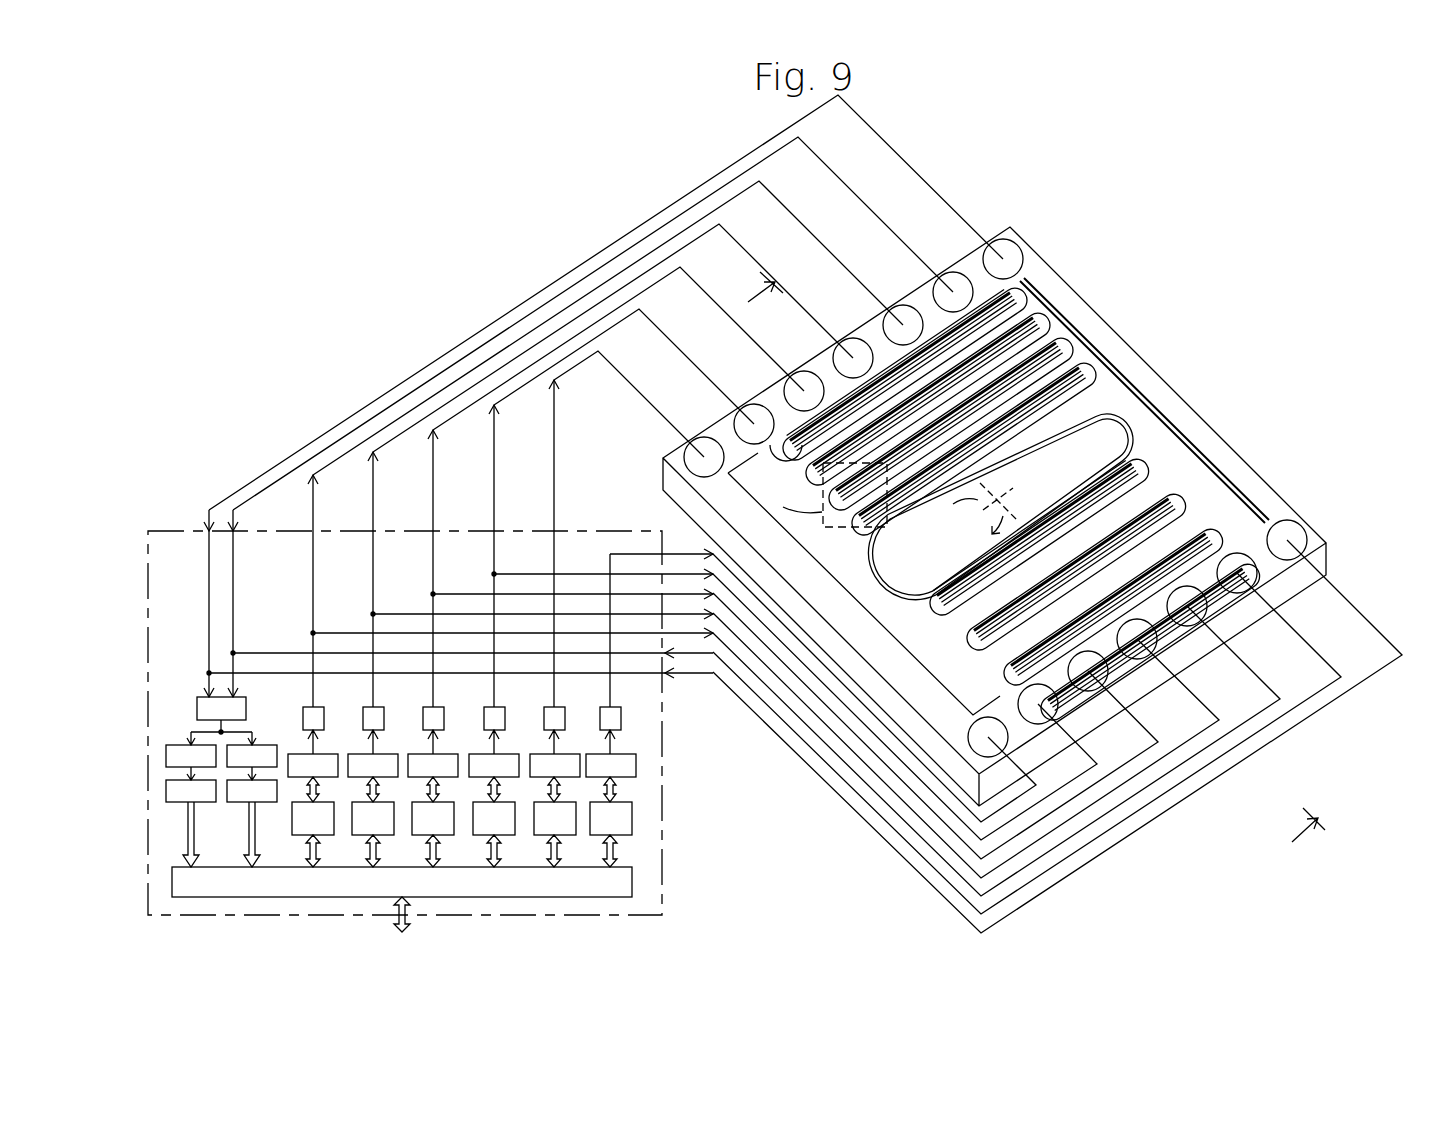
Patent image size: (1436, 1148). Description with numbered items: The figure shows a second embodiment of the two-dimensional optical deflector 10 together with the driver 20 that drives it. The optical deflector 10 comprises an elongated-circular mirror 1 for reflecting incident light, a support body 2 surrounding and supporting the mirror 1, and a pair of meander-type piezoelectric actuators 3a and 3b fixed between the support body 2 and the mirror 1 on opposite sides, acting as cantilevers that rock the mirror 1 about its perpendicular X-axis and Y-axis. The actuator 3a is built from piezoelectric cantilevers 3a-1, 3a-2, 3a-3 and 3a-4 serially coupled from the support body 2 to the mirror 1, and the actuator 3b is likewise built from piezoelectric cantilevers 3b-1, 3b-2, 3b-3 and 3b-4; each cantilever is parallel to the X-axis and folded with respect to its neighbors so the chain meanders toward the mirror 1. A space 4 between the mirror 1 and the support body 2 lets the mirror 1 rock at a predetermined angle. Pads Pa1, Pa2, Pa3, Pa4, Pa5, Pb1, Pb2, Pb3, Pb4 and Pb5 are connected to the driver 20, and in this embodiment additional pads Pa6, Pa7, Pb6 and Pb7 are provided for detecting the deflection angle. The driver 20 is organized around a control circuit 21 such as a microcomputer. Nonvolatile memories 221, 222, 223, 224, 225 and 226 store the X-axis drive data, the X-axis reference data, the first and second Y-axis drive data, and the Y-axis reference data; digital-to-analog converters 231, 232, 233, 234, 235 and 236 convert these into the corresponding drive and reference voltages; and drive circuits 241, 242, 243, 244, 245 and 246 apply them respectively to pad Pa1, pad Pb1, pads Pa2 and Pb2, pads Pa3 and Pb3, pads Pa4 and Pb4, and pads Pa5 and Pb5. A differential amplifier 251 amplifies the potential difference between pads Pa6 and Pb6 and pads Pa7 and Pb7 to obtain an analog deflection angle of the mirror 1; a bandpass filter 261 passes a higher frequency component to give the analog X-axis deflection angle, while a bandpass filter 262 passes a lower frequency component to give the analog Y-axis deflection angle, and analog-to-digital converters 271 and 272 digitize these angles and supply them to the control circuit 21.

The two-dimensional optical deflector 10 is at (1030, 153).
The driver 20 is at (662, 775).
The control circuit 21 is at (632, 882).
The mirror 1 is at (1080, 410).
The support body 2 is at (1282, 517).
The space 4 is at (1143, 440).
The piezoelectric actuator 3a is at (1005, 361).
The piezoelectric cantilever 3a-1 is at (1018, 270).
The piezoelectric cantilever 3a-2 is at (1042, 295).
The piezoelectric cantilever 3a-3 is at (1064, 320).
The piezoelectric cantilever 3a-4 is at (1088, 344).
The piezoelectric actuator 3b is at (1159, 532).
The piezoelectric cantilever 3b-1 is at (1218, 538).
The piezoelectric cantilever 3b-2 is at (1196, 514).
The piezoelectric cantilever 3b-3 is at (1174, 490).
The piezoelectric cantilever 3b-4 is at (1152, 466).
The nonvolatile memory 221 is at (560, 802).
The nonvolatile memory 222 is at (616, 802).
The nonvolatile memory 223 is at (500, 802).
The nonvolatile memory 224 is at (439, 802).
The nonvolatile memory 225 is at (379, 802).
The nonvolatile memory 226 is at (319, 802).
The digital-to-analog converter 231 is at (561, 754).
The digital-to-analog converter 232 is at (617, 754).
The digital-to-analog converter 233 is at (501, 754).
The digital-to-analog converter 234 is at (440, 754).
The digital-to-analog converter 235 is at (380, 754).
The digital-to-analog converter 236 is at (320, 754).
The drive circuit 241 is at (562, 707).
The drive circuit 242 is at (618, 707).
The drive circuit 243 is at (502, 707).
The drive circuit 244 is at (441, 707).
The drive circuit 245 is at (381, 707).
The drive circuit 246 is at (321, 707).
The differential amplifier 251 is at (243, 700).
The bandpass filter 261 is at (256, 748).
The bandpass filter 262 is at (187, 748).
The analog-to-digital converter 271 is at (261, 804).
The analog-to-digital converter 272 is at (200, 804).
The upper electrode pad Pa1 is at (681, 449).
The lower electrode pad Pa2 is at (731, 415).
The upper electrode pad Pa3 is at (780, 382).
The upper electrode pad Pa4 is at (830, 348).
The lower electrode pad Pa5 is at (880, 315).
The upper electrode pad Pa6 is at (930, 282).
The lower electrode pad Pa7 is at (978, 248).
The upper electrode pad Pb1 is at (988, 737).
The lower electrode pad Pb2 is at (1038, 704).
The upper electrode pad Pb3 is at (1088, 671).
The upper electrode pad Pb4 is at (1137, 639).
The lower electrode pad Pb5 is at (1187, 606).
The upper electrode pad Pb6 is at (1237, 573).
The lower electrode pad Pb7 is at (1287, 540).